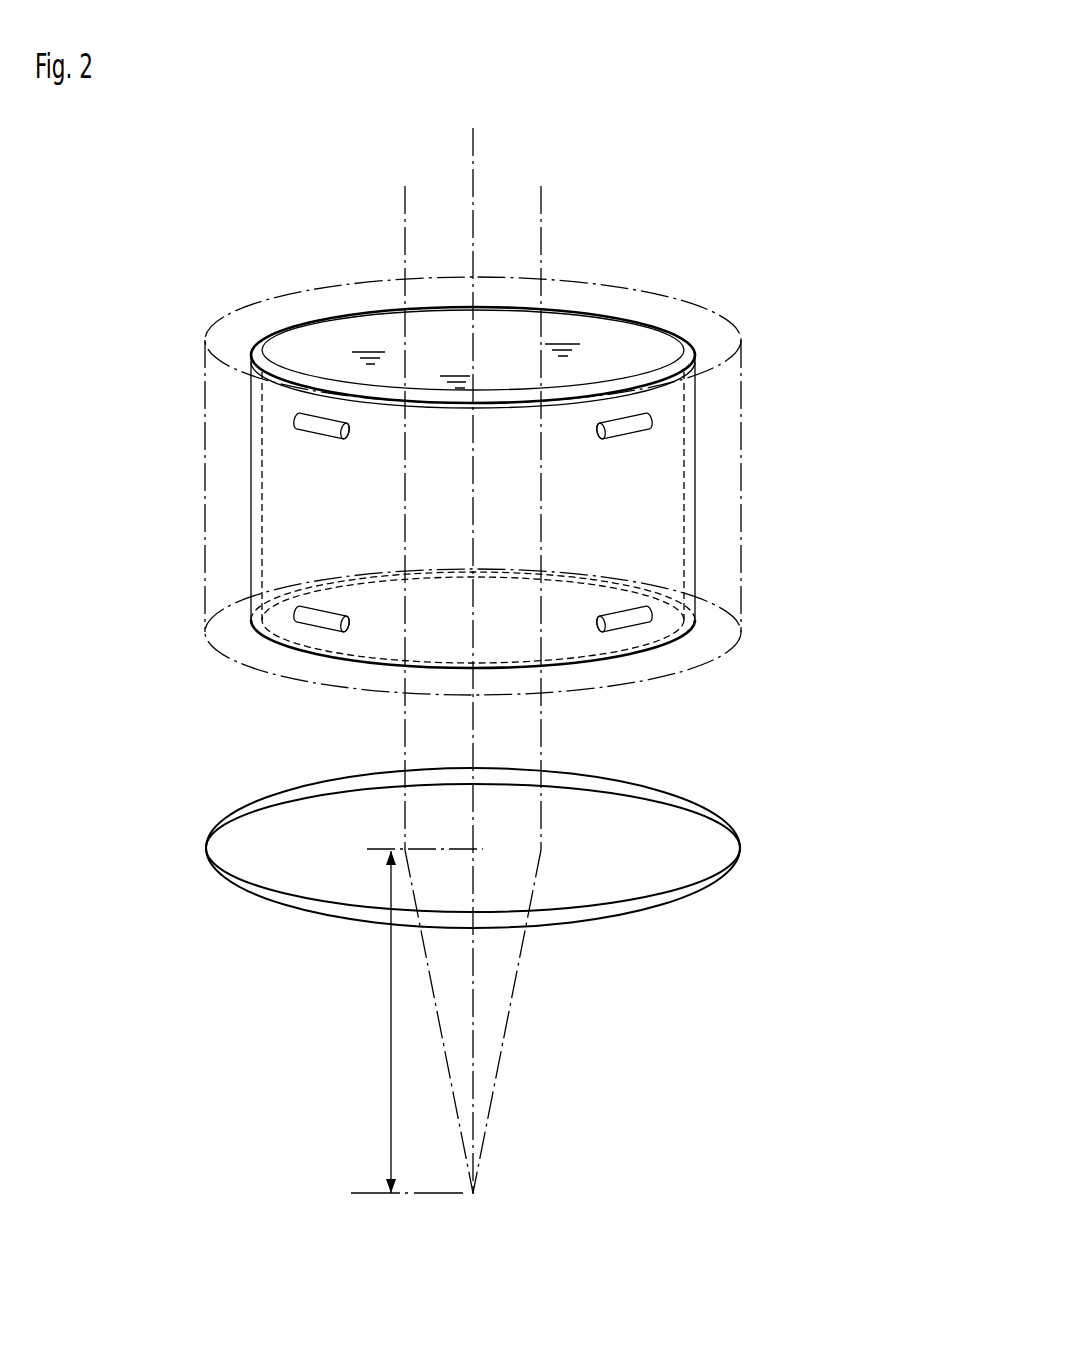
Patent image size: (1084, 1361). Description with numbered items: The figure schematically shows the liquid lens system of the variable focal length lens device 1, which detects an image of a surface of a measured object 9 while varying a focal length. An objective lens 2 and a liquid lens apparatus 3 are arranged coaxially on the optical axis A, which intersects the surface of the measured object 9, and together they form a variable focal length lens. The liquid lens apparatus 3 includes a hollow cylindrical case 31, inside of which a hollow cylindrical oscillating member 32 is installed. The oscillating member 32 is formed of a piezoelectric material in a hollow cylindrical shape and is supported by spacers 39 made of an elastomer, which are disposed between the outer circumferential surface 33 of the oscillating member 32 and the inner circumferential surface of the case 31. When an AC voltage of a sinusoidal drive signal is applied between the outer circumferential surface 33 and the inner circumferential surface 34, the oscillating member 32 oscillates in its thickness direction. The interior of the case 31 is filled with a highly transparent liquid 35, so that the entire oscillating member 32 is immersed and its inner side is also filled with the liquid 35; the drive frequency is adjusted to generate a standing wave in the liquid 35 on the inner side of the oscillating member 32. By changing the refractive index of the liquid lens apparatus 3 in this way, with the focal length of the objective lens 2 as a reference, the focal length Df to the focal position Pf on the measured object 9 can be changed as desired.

The variable focal length lens device 1 is at (853, 195).
The objective lens 2 is at (200, 832).
The liquid lens apparatus 3 is at (195, 330).
The case 31 is at (205, 437).
The oscillating member 32 is at (251, 523).
The outer circumferential surface 33 is at (683, 338).
The inner circumferential surface 34 is at (625, 360).
The liquid 35 is at (560, 345).
The spacers 39 is at (317, 612).
The measured object 9 is at (361, 1193).
The optical axis A is at (468, 184).
The focal length Df is at (373, 1022).
The focal position Pf is at (478, 1192).